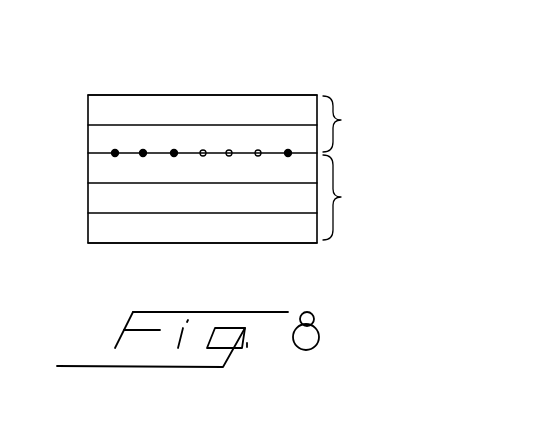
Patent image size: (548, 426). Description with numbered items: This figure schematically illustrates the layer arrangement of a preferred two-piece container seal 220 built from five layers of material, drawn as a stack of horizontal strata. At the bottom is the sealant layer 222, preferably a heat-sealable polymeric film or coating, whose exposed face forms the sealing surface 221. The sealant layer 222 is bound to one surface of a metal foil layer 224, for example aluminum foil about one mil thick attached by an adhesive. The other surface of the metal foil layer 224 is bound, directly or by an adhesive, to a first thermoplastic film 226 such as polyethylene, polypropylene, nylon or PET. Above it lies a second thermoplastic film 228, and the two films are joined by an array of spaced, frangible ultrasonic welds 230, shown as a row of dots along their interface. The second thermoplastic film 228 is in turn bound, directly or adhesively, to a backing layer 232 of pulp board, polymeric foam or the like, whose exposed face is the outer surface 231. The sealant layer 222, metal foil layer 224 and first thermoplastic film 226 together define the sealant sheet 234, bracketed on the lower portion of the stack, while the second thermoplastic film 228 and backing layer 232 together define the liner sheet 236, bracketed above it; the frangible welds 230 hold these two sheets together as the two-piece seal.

The two-piece container seal 220 is at (333, 244).
The sealing surface 221 is at (168, 246).
The sealant layer 222 is at (108, 233).
The metal foil layer 224 is at (97, 201).
The first thermoplastic film 226 is at (97, 172).
The second thermoplastic film 228 is at (97, 142).
The frangible ultrasonic welds 230 is at (174, 152).
The outer surface 231 is at (247, 93).
The backing layer 232 is at (97, 113).
The sealant sheet 234 is at (340, 198).
The liner sheet 236 is at (346, 121).